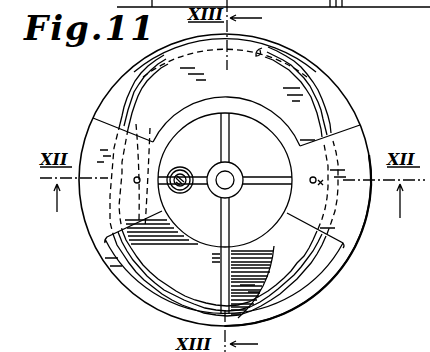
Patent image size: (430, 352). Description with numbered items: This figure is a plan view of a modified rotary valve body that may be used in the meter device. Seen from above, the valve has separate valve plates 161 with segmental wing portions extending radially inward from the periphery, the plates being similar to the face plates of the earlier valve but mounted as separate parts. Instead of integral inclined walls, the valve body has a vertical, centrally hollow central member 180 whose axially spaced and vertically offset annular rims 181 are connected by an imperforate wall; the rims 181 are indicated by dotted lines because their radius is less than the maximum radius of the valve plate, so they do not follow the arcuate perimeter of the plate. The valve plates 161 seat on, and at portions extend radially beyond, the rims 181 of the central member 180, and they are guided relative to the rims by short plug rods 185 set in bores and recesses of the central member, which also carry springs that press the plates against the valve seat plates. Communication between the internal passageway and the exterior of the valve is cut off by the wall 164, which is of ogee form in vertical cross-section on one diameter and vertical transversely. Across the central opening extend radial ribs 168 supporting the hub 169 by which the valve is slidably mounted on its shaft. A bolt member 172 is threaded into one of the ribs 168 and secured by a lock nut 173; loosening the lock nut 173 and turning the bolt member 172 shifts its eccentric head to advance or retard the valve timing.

The valve plates 161 is at (98, 140).
The wall 164 is at (290, 262).
The ribs 168 is at (232, 148).
The hub 169 is at (237, 192).
The bolt member 172 is at (176, 193).
The lock nut 173 is at (176, 166).
The central member 180 is at (300, 97).
The annular rims 181 is at (258, 54).
The plug rods 185 is at (135, 178).